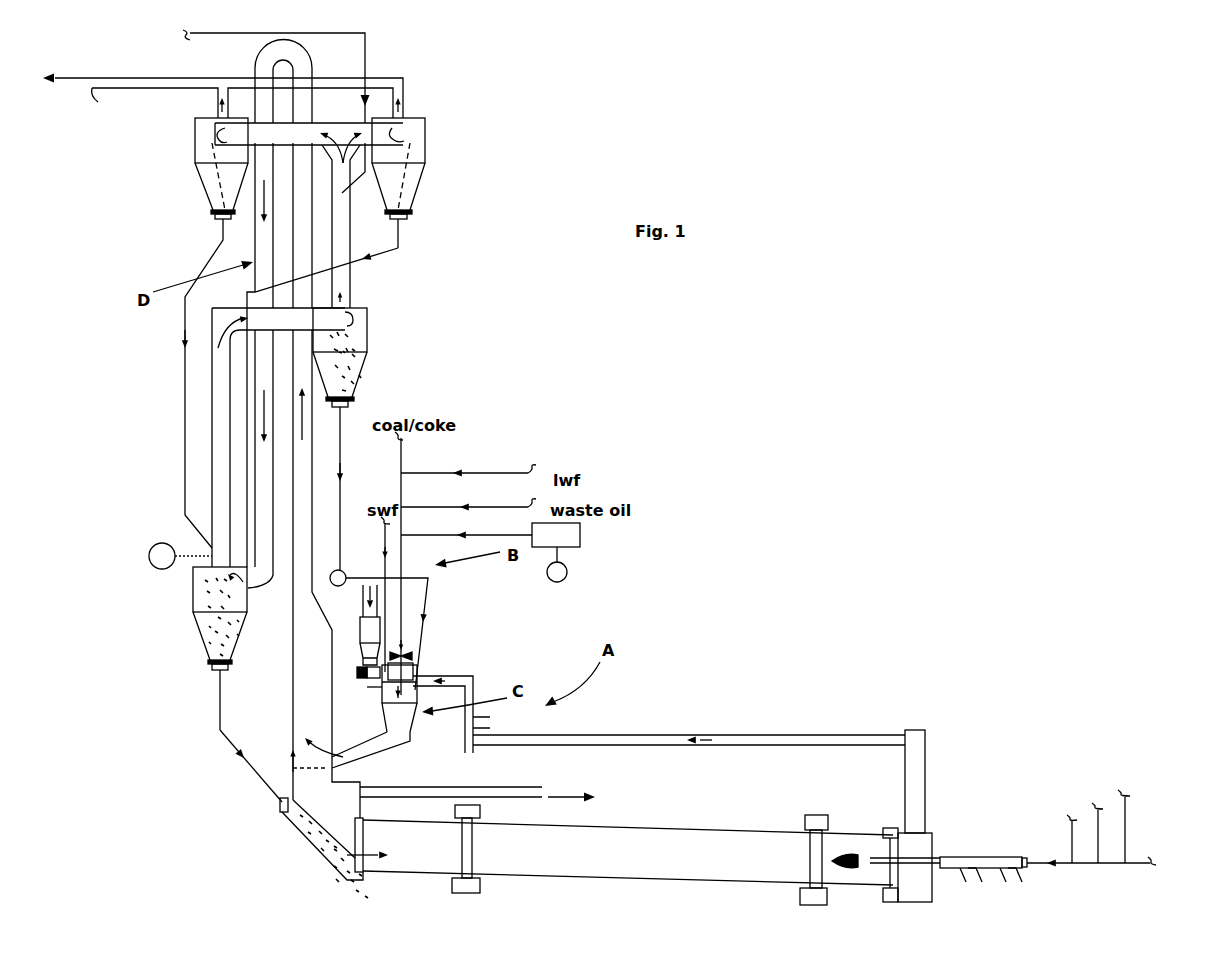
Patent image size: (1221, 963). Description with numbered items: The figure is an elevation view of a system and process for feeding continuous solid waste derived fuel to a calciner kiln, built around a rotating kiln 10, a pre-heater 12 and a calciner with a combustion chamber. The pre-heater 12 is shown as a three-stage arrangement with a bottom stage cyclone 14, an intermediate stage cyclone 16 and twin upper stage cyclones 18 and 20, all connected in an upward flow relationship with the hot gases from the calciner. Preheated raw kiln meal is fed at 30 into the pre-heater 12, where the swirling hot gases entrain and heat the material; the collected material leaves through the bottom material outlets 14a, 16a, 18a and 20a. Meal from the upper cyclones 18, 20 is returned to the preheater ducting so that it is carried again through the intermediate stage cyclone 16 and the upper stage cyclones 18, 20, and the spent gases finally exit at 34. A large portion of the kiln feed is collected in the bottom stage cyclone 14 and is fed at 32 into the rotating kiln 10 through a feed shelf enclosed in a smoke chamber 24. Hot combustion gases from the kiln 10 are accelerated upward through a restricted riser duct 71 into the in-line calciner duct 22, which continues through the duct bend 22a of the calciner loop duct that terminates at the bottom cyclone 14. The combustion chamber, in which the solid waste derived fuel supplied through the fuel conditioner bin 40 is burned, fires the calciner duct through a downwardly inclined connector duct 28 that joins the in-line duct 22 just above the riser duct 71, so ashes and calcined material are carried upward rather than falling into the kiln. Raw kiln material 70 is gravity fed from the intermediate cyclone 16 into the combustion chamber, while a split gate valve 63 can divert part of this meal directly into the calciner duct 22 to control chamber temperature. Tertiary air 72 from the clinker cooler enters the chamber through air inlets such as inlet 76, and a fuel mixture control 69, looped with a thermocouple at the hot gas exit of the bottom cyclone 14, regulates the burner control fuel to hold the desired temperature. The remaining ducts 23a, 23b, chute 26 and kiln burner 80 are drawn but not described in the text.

The rotating kiln 10 is at (700, 820).
The pre-heater 12 is at (160, 595).
The bottom stage cyclone 14 is at (207, 627).
The bottom material outlet of cyclone 14 14a is at (212, 668).
The intermediate stage cyclone 16 is at (363, 370).
The bottom material outlet of cyclone 16 16a is at (353, 408).
The upper stage cyclone 18 is at (420, 157).
The bottom material outlet of cyclone 18 18a is at (407, 218).
The upper stage cyclone 20 is at (215, 182).
The bottom material outlet of cyclone 20 20a is at (212, 217).
The in-line calciner duct 22 is at (326, 668).
The duct bend 22a is at (300, 43).
The gas duct 23a is at (210, 410).
The gas duct 23b is at (357, 279).
The smoke chamber 24 is at (335, 800).
The kiln inlet chute 26 is at (315, 848).
The connector duct 28 is at (370, 740).
The preheated raw kiln meal feed 30 is at (215, 33).
The kiln feed 32 is at (237, 750).
The gas exit 34 is at (223, 101).
The fuel conditioner bin 40 is at (373, 632).
The split gate valve 63 is at (343, 573).
The fuel mixture control 69 is at (556, 552).
The raw kiln material 70 is at (420, 642).
The restricted riser duct 71 is at (297, 788).
The tertiary air 72 is at (622, 733).
The air inlet 76 is at (455, 678).
The kiln burner 80 is at (918, 888).